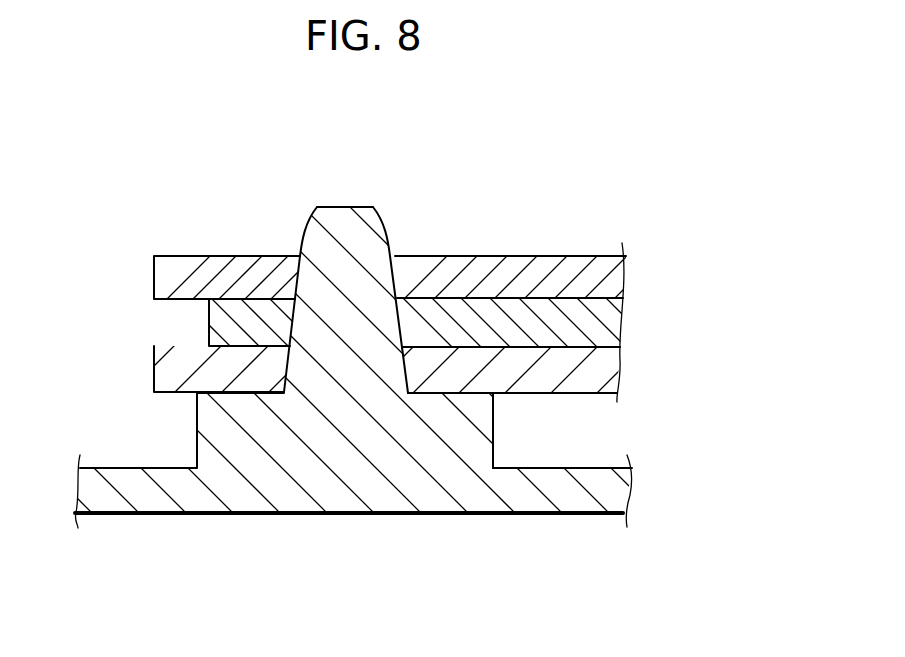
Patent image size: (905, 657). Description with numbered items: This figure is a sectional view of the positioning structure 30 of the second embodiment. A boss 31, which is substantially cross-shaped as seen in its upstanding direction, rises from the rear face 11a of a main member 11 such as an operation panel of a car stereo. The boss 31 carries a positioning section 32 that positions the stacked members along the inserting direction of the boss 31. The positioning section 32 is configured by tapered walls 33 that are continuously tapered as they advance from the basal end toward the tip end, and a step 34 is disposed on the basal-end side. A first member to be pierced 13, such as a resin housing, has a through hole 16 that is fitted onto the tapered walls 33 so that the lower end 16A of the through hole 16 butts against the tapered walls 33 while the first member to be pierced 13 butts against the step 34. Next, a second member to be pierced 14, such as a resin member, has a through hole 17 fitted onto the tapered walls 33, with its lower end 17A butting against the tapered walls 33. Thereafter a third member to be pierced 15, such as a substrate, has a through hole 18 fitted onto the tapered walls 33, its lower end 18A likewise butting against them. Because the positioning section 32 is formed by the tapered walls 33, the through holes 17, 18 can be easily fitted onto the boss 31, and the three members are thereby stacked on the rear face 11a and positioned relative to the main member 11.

The main member 11 is at (170, 497).
The rear face 11a is at (577, 468).
The first member to be pierced 13 is at (167, 373).
The second member to be pierced 14 is at (225, 325).
The third member to be pierced 15 is at (167, 280).
The through hole 16 is at (403, 378).
The lower end 16A is at (287, 397).
The through hole 17 is at (433, 307).
The lower end 17A is at (290, 347).
The through hole 18 is at (385, 256).
The lower end 18A is at (297, 298).
The positioning structure 30 is at (459, 130).
The boss 31 is at (371, 184).
The positioning section 32 is at (282, 219).
The tapered wall 33 is at (440, 292).
The step 34 is at (468, 393).